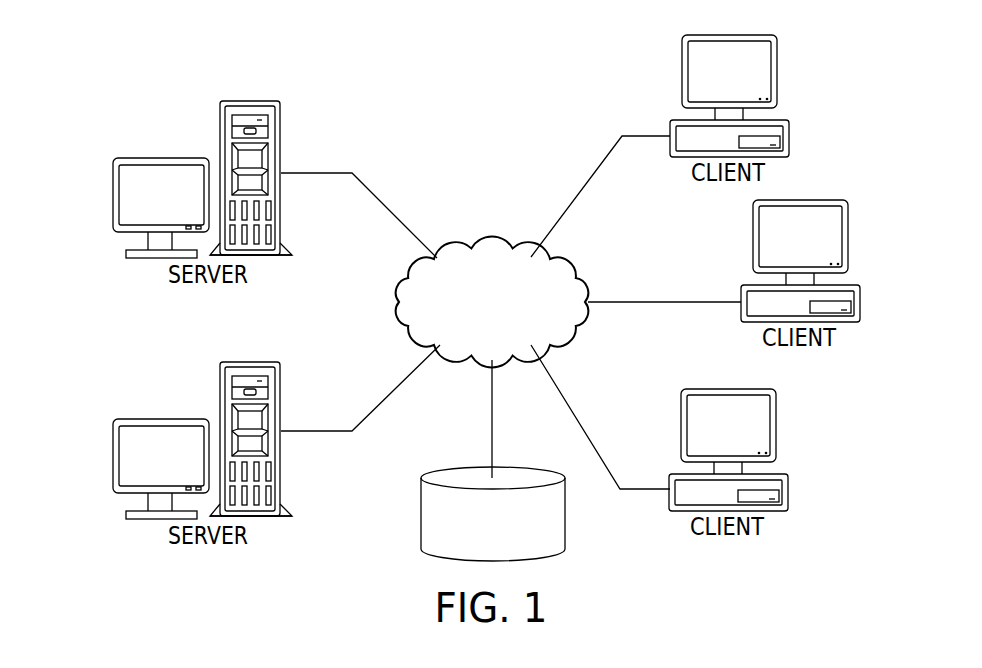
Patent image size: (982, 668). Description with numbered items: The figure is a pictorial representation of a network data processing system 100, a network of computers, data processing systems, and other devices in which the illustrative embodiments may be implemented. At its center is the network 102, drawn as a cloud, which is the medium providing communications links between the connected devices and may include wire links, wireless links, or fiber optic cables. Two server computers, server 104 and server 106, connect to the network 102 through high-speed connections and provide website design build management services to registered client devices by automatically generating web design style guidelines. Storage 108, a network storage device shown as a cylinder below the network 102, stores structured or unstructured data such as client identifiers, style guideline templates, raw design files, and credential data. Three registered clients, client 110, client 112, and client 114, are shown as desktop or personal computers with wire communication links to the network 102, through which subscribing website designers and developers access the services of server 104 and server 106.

The network data processing system 100 is at (352, 76).
The network 102 is at (468, 252).
The server 104 is at (113, 195).
The server 106 is at (113, 456).
The storage 108 is at (421, 512).
The client 110 is at (797, 128).
The client 112 is at (862, 310).
The client 114 is at (797, 497).